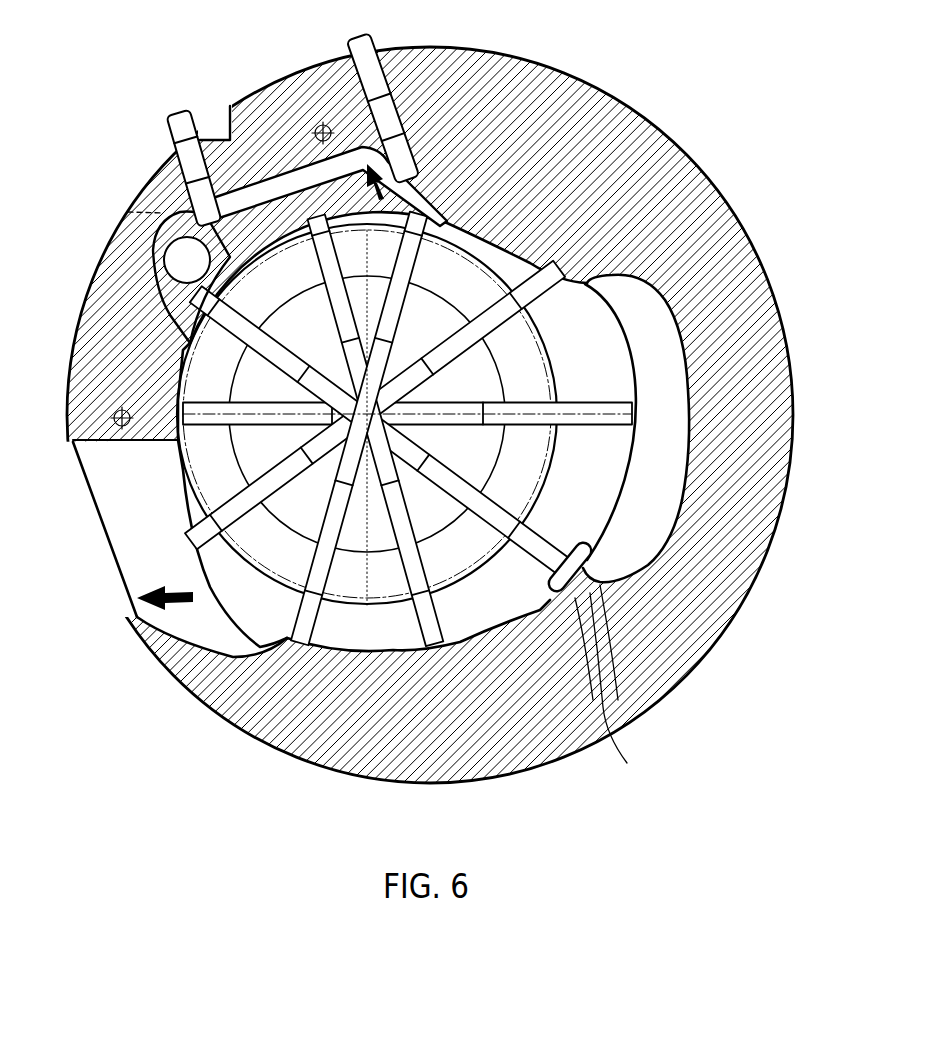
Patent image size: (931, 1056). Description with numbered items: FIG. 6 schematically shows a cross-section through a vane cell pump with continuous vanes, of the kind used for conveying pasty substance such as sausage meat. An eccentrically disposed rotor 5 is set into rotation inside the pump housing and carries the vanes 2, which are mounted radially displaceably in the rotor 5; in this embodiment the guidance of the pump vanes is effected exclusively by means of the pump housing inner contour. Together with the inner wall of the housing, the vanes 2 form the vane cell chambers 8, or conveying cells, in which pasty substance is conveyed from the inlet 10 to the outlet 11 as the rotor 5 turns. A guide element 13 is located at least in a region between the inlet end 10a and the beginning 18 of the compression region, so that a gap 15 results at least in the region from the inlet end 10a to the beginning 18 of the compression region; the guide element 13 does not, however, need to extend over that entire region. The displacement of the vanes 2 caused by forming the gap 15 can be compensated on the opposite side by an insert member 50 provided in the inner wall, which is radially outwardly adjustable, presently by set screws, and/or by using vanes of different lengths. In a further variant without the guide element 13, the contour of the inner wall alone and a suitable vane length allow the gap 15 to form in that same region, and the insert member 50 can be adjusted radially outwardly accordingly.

The vanes 2 is at (540, 548).
The rotor 5 is at (267, 557).
The vane cell chambers 8 is at (372, 646).
The inlet 10 is at (647, 510).
The inlet end 10a is at (630, 605).
The outlet 11 is at (118, 563).
The guide element 13 is at (640, 578).
The gap 15 is at (563, 550).
The beginning of the compression region 18 is at (596, 680).
The insert member 50 is at (264, 192).